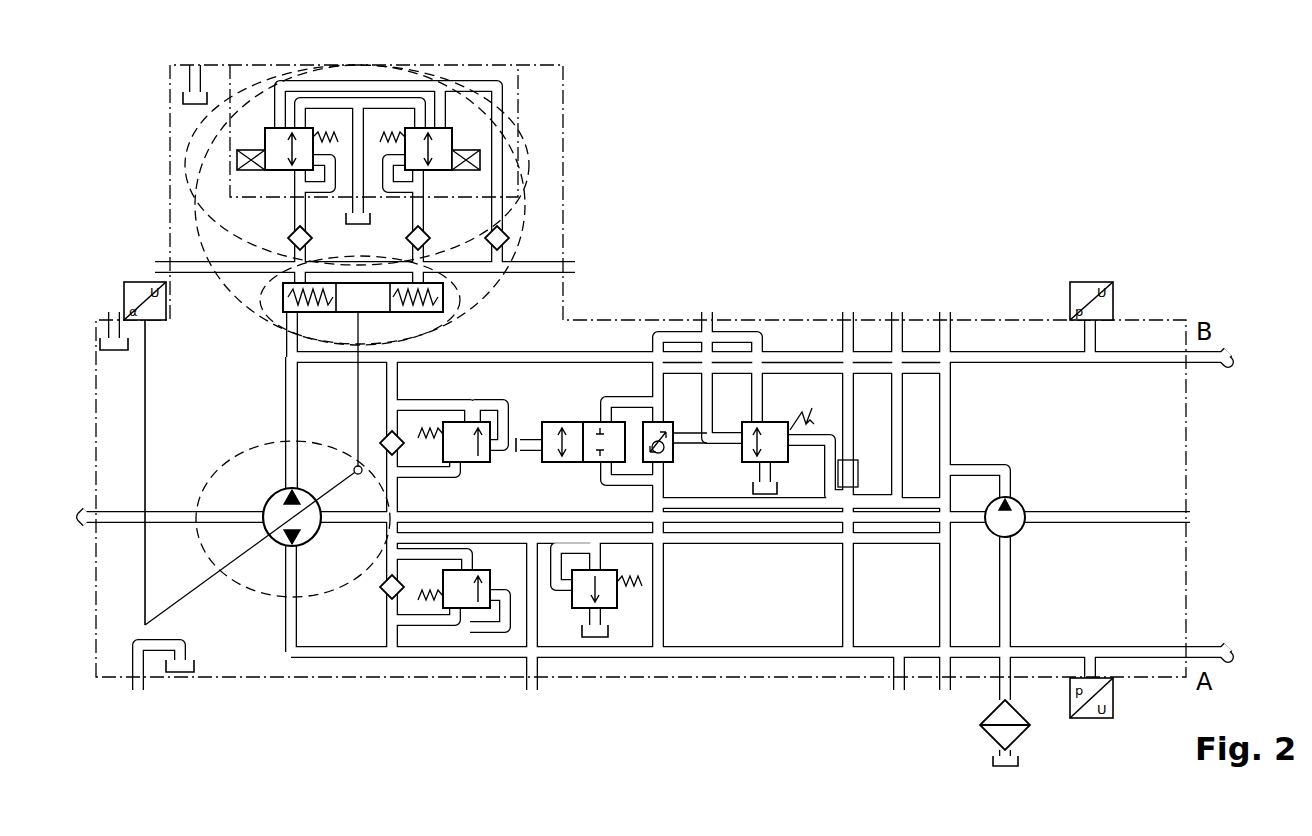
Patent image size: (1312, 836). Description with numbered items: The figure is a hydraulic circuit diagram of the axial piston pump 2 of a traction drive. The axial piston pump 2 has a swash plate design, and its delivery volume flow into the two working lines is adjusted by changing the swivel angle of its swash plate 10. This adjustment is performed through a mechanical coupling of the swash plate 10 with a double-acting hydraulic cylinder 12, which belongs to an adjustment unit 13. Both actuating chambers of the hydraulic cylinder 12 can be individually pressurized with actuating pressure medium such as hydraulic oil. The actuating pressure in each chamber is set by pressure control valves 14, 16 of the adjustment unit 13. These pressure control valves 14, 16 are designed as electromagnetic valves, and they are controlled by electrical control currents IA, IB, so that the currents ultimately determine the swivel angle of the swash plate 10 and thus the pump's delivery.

The axial piston pump 2 is at (240, 458).
The swash plate 10 is at (345, 483).
The double-acting hydraulic cylinder 12 is at (262, 336).
The adjustment unit 13 is at (530, 182).
The pressure control valve 14 is at (268, 128).
The pressure control valve 16 is at (450, 128).
The control current IA is at (237, 152).
The control current IB is at (483, 155).